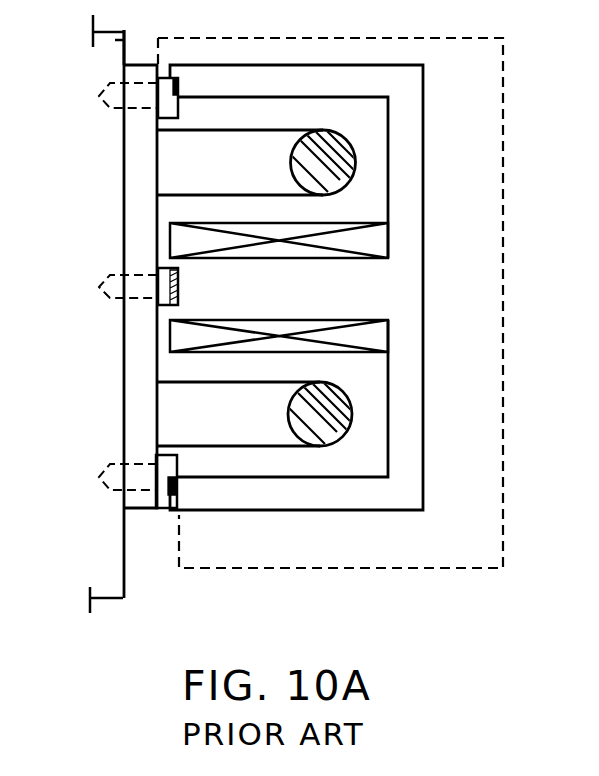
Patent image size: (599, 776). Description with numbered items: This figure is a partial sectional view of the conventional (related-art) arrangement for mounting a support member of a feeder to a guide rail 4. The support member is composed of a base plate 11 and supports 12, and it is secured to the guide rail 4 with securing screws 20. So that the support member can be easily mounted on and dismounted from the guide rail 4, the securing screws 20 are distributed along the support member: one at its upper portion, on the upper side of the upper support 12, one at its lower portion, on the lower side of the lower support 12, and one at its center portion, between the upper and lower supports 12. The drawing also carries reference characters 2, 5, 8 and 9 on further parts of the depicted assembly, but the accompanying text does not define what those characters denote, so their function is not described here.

The electromagnetic lock unit 2 is at (503, 340).
The guide rail 4 is at (125, 42).
The permanent magnet 5 is at (350, 148).
The housing 8 is at (427, 385).
The coil 9 is at (380, 240).
The base plate 11 is at (137, 178).
The supports 12 is at (268, 432).
The securing screws 20 is at (178, 105).